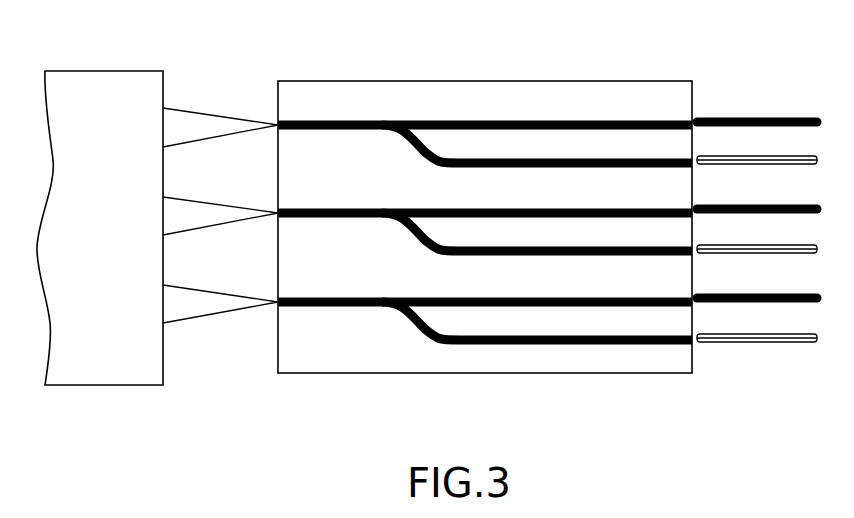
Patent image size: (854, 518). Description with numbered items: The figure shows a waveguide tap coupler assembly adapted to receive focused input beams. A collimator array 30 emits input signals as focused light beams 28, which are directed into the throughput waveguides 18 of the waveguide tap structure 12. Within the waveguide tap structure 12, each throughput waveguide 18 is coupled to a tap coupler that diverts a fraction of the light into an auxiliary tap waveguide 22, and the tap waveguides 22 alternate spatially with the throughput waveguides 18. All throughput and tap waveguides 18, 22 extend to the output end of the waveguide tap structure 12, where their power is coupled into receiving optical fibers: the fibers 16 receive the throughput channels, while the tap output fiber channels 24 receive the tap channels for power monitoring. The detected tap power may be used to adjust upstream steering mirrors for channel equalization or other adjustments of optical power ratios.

The waveguide tap structure 12 is at (490, 373).
The receiving optical fibers 16 is at (752, 342).
The throughput waveguide 18 is at (505, 120).
The tap waveguide 22 is at (596, 158).
The tap output fiber channels 24 is at (790, 303).
The focused light beams 28 is at (198, 318).
The collimator array 30 is at (102, 385).